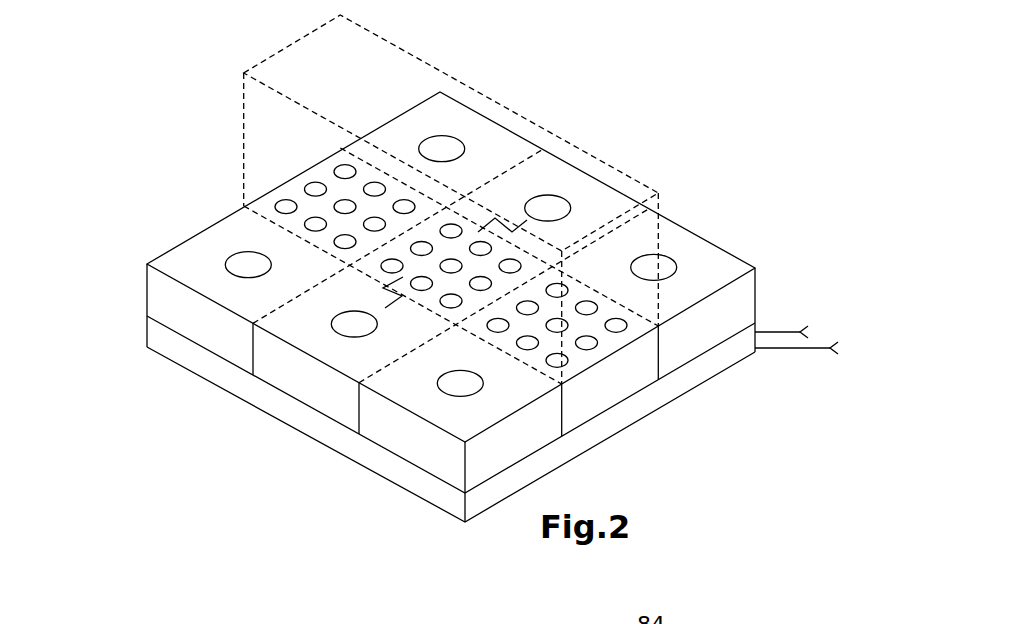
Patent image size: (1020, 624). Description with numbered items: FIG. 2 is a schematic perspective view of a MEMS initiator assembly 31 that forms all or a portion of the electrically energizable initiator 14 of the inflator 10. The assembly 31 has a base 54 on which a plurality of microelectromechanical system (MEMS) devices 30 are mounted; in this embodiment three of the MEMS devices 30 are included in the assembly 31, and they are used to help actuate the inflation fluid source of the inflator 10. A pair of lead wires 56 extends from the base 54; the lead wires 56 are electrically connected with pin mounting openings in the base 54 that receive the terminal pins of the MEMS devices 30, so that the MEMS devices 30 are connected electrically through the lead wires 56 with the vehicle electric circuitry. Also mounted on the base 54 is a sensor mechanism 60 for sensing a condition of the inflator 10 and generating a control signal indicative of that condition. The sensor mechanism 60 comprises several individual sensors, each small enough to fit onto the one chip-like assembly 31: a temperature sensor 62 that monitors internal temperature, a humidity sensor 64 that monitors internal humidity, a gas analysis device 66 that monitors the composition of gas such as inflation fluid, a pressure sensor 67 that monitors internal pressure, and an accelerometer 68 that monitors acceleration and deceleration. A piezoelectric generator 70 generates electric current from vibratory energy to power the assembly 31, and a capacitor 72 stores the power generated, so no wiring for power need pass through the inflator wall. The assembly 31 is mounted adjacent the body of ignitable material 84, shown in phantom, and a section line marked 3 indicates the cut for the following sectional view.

The inflator 10 is at (188, 518).
The initiator 14 is at (198, 465).
The MEMS devices 30 is at (300, 168).
The assembly 31 is at (200, 422).
The base 54 is at (147, 328).
The lead wires 56 is at (782, 334).
The sensor mechanism 60 is at (187, 172).
The temperature sensor 62 is at (195, 260).
The humidity sensor 64 is at (313, 378).
The gas analysis device 66 is at (417, 437).
The pressure sensor 67 is at (415, 128).
The accelerometer 68 is at (607, 208).
The piezoelectric generator 70 is at (705, 261).
The capacitor 72 is at (727, 271).
The body of ignitable material 84 is at (310, 33).
The section line for Fig. 3 is at (414, 229).